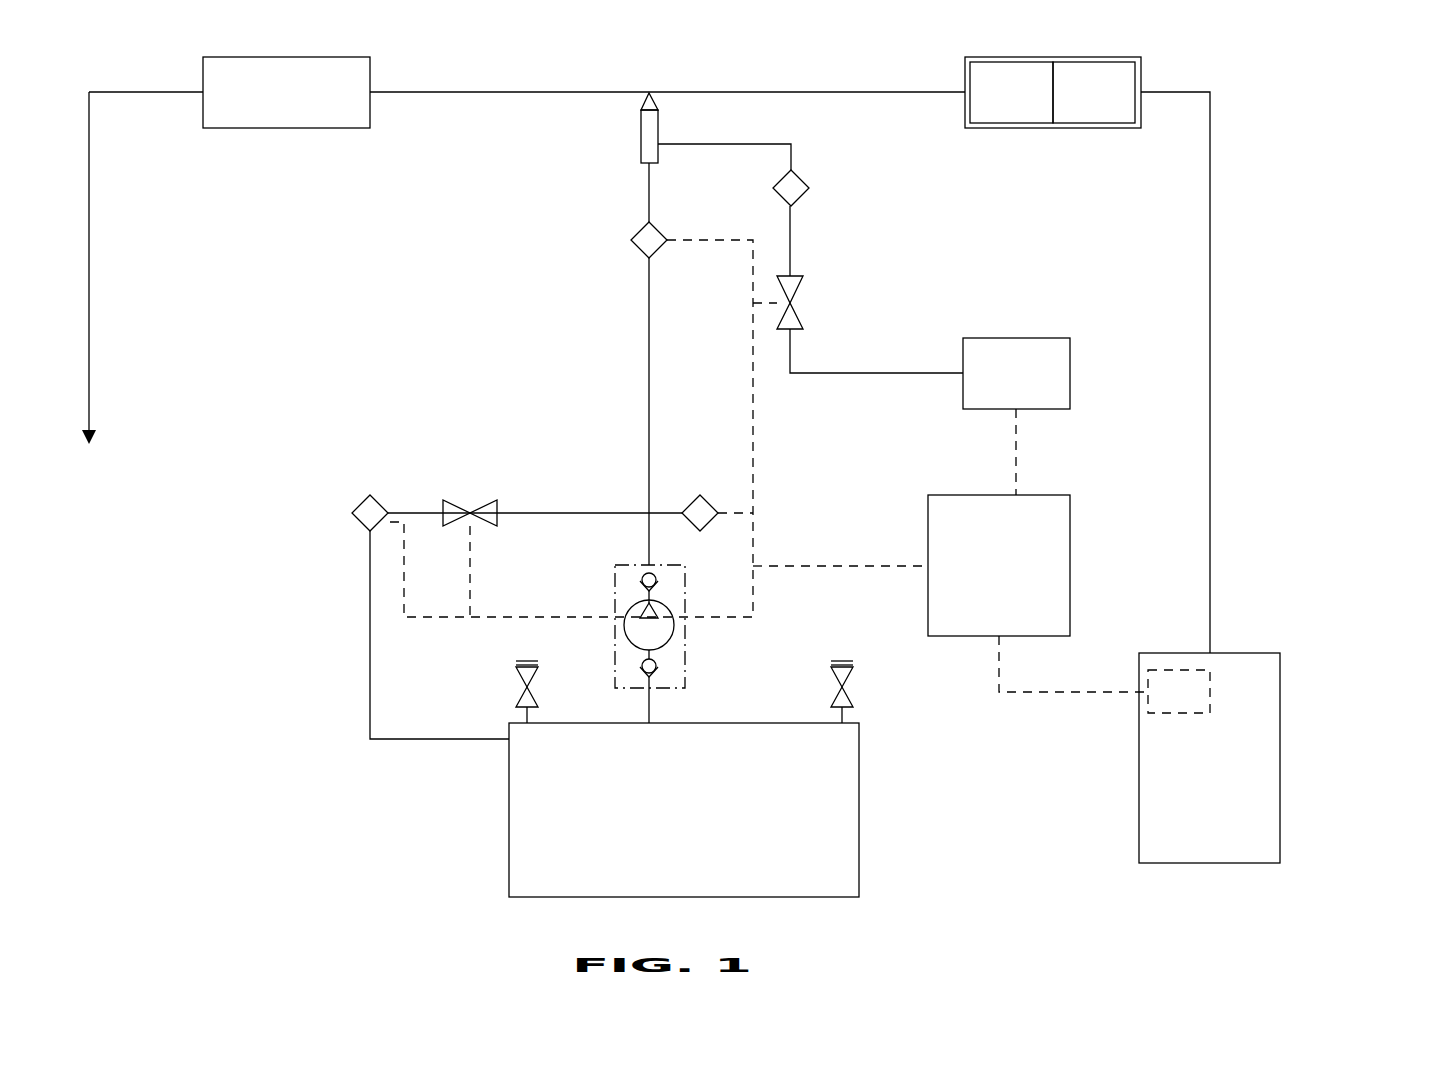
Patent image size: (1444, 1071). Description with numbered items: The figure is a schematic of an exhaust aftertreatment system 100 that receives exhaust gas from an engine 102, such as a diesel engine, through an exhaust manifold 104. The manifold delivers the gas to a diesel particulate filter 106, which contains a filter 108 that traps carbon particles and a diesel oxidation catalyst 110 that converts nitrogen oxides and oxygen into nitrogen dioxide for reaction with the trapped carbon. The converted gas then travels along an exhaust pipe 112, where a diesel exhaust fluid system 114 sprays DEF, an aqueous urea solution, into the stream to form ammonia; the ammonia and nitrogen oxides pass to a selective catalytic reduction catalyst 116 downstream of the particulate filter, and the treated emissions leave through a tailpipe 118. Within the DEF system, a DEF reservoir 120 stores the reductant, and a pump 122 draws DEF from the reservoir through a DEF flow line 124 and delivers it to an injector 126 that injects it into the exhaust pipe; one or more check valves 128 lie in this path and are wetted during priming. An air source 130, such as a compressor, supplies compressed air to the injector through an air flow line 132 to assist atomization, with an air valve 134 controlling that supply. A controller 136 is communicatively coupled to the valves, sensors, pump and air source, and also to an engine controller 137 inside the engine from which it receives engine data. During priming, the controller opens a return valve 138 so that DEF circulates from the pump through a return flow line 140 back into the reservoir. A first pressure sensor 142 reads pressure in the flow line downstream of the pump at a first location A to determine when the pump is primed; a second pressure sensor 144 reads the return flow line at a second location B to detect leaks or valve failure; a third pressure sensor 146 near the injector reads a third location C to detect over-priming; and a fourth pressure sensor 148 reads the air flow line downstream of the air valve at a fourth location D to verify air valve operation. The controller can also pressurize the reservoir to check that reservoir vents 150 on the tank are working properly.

The exhaust aftertreatment system 100 is at (1331, 111).
The engine 102 is at (1209, 758).
The exhaust manifold 104 is at (1210, 372).
The diesel particulate filter 106 is at (1053, 113).
The filter 108 is at (1011, 92).
The diesel oxidation catalyst 110 is at (1094, 92).
The exhaust pipe 112 is at (912, 95).
The diesel exhaust fluid system 114 is at (509, 303).
The selective catalytic reduction catalyst 116 is at (286, 92).
The tailpipe 118 is at (90, 234).
The DEF reservoir 120 is at (684, 810).
The pump 122 is at (625, 612).
The DEF flow line 124 is at (649, 440).
The injector 126 is at (641, 148).
The check valve 128 is at (655, 578).
The air source 130 is at (1016, 373).
The air flow line 132 is at (860, 373).
The air valve 134 is at (795, 276).
The controller 136 is at (950, 550).
The engine controller 137 is at (1179, 691).
The return valve 138 is at (495, 503).
The return flow line 140 is at (370, 623).
The first pressure sensor 142 is at (712, 500).
The second pressure sensor 144 is at (360, 503).
The third pressure sensor 146 is at (636, 236).
The fourth pressure sensor 148 is at (805, 189).
The reservoir vent 150 is at (517, 668).
The first location A is at (649, 511).
The second location B is at (366, 528).
The third location C is at (651, 260).
The fourth location D is at (791, 170).